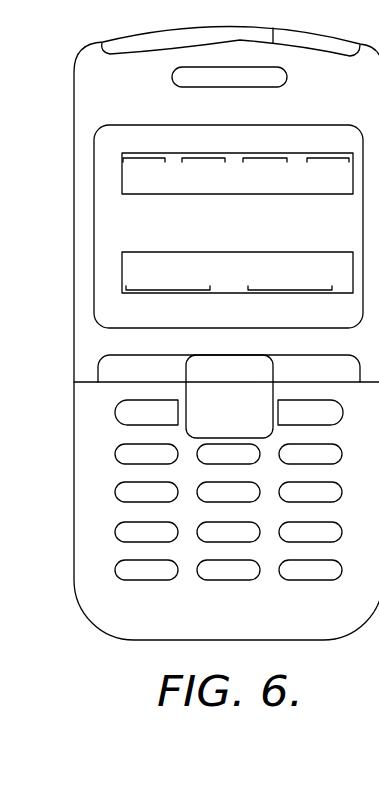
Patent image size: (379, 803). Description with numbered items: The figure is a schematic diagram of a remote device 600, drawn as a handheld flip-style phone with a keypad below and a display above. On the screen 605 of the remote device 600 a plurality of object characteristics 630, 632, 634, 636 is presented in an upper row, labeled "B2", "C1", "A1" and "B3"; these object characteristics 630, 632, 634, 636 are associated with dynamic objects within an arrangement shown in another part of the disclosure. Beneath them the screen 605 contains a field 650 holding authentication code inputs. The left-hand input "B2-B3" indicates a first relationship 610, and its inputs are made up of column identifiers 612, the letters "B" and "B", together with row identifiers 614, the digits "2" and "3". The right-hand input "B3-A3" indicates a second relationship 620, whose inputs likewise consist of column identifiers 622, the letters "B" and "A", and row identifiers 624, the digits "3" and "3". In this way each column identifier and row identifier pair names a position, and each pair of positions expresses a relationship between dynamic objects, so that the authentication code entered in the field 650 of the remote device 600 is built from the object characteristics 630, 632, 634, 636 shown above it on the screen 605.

The remote device 600 is at (39, 126).
The screen 605 is at (94, 193).
The first relationship 610 is at (172, 290).
The column identifiers 612 is at (138, 256).
The row identifiers 614 is at (160, 256).
The second relationship 620 is at (295, 290).
The column identifiers 622 is at (260, 256).
The row identifiers 624 is at (282, 256).
The object characteristic 630 is at (147, 158).
The object characteristic 632 is at (207, 158).
The object characteristic 634 is at (267, 158).
The object characteristic 636 is at (330, 158).
The text entry field 650 is at (111, 276).